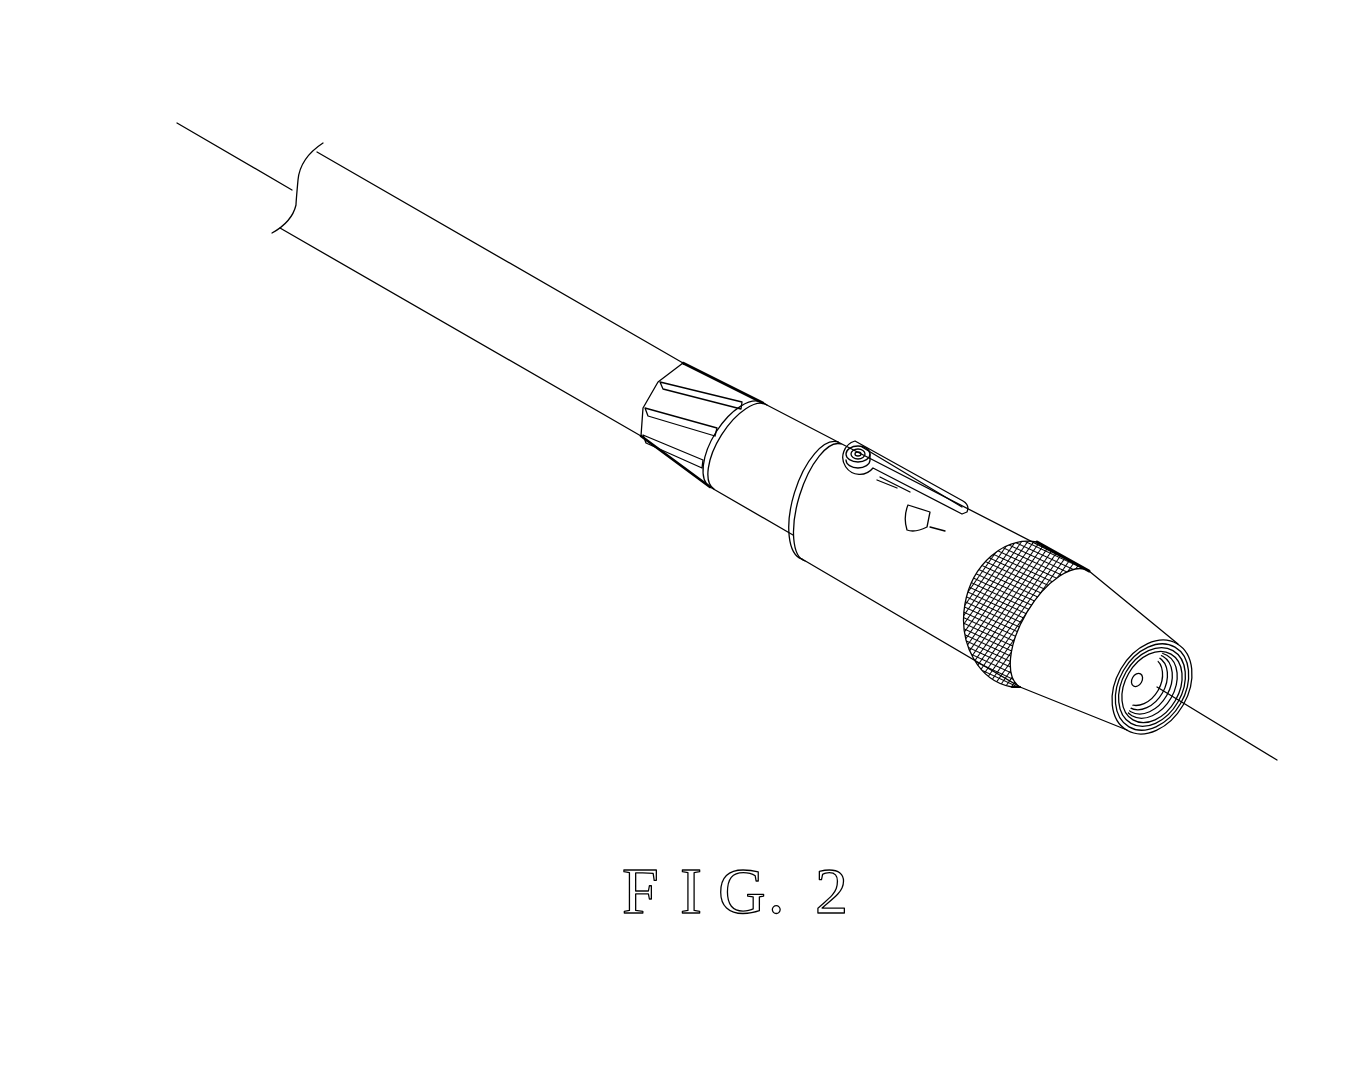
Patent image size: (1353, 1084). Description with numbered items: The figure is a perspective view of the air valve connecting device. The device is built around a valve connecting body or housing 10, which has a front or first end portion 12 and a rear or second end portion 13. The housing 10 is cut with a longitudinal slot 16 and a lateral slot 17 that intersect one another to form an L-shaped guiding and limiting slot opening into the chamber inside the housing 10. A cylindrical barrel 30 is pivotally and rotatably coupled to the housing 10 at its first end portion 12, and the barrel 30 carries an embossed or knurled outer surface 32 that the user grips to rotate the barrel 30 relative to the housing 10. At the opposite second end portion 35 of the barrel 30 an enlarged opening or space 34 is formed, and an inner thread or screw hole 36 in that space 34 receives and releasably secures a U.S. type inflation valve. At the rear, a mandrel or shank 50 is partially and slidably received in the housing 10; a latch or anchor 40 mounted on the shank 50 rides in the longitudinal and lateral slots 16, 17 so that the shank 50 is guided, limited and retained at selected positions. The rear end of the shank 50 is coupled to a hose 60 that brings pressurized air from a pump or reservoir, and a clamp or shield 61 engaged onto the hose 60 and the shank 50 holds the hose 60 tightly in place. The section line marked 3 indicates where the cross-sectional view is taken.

The section line of FIG. 3 is at (210, 157).
The housing 10 is at (898, 525).
The first end portion 12 is at (994, 610).
The second end portion 13 is at (803, 547).
The longitudinal slot 16 is at (912, 483).
The lateral slot 17 is at (925, 523).
The barrel 30 is at (1145, 712).
The knurled outer surface 32 is at (990, 677).
The enlarged space 34 is at (1177, 667).
The second end portion 35 is at (1117, 727).
The inner thread 36 is at (1150, 718).
The latch 40 is at (858, 455).
The shank 50 is at (738, 500).
The hose 60 is at (512, 285).
The clamp 61 is at (670, 438).